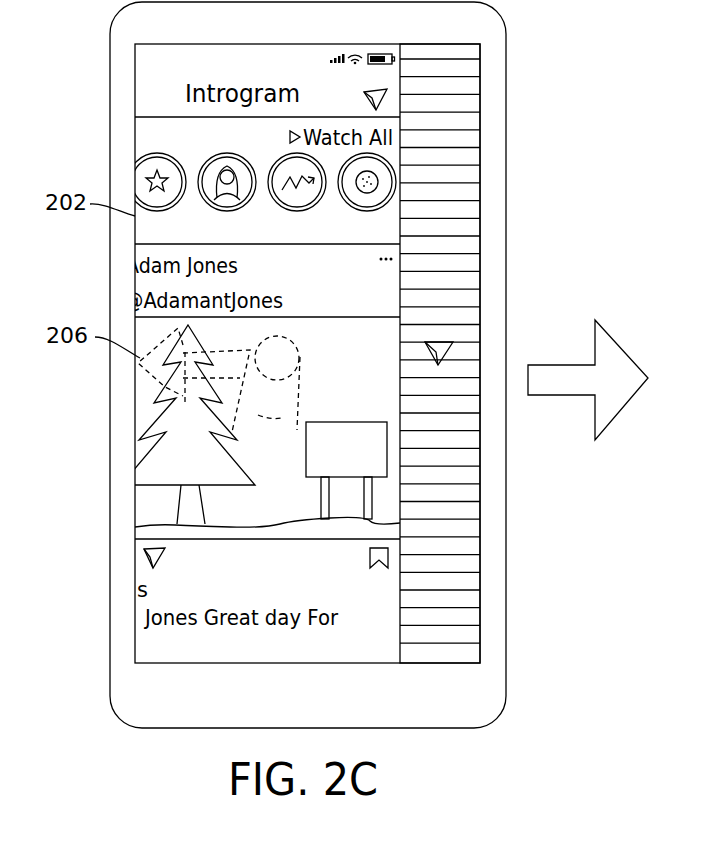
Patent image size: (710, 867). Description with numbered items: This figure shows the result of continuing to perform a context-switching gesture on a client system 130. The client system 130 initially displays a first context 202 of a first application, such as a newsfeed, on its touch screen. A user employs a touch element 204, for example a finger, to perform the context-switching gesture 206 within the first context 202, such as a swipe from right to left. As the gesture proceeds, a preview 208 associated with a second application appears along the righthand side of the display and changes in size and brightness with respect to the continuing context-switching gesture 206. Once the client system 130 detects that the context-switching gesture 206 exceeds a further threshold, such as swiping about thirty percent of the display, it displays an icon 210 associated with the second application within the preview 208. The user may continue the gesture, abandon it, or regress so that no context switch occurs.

The client system 130 is at (110, 46).
The first context 202 is at (135, 216).
The touch element 204 is at (300, 366).
The context-switching gesture 206 is at (140, 358).
The preview 208 is at (482, 172).
The icon 210 is at (455, 343).